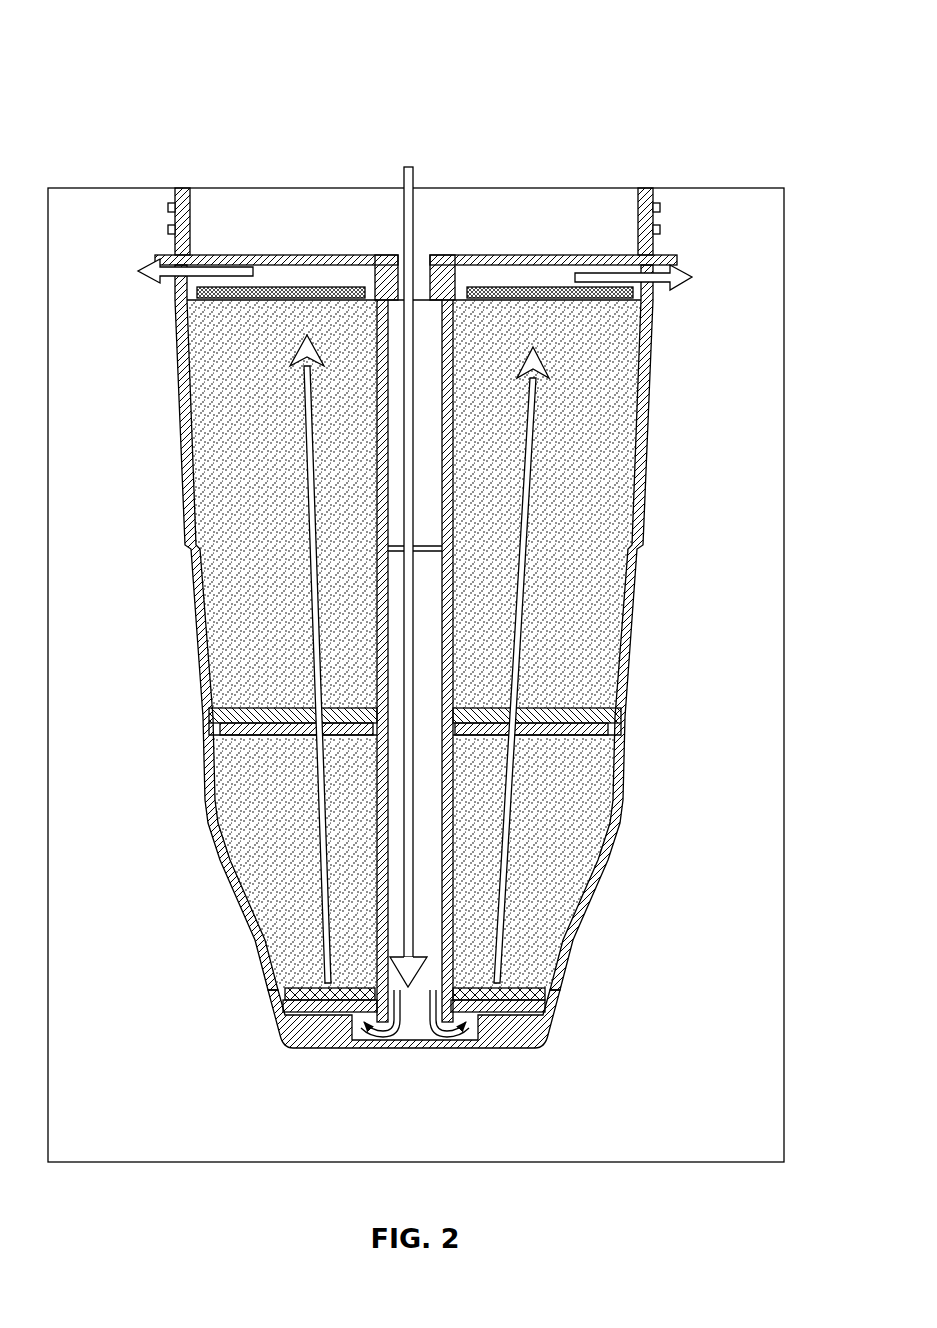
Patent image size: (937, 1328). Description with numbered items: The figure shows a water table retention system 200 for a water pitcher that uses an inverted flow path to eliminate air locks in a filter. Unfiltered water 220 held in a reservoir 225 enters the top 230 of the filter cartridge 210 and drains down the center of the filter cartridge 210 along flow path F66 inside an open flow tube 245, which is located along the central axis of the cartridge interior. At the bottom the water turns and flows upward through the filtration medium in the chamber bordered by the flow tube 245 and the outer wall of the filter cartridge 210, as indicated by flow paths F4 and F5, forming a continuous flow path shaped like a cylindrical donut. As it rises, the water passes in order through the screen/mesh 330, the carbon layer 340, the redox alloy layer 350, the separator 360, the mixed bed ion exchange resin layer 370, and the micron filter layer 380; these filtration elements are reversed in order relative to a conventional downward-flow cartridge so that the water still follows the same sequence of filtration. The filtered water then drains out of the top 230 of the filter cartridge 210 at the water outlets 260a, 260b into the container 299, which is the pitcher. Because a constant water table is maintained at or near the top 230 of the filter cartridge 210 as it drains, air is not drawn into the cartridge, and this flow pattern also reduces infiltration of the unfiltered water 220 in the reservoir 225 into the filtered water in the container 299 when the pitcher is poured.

The water table retention system 200 is at (110, 46).
The filter cartridge 210 is at (642, 628).
The water 220 is at (471, 205).
The reservoir 225 is at (650, 196).
The top of the filter cartridge 230 is at (265, 280).
The open flow tube 245 is at (398, 880).
The water outlet 260a is at (661, 293).
The water outlet 260b is at (165, 290).
The container 299 is at (784, 1093).
The screen/mesh 330 is at (553, 994).
The carbon layer 340 is at (564, 918).
The redox alloy layer 350 is at (606, 746).
The separator 360 is at (621, 715).
The mixed bed ion exchange resin layer 370 is at (614, 467).
The micron filter layer 380 is at (600, 300).
The flow path F4 is at (508, 820).
The flow path F5 is at (314, 822).
The flow path F66 is at (400, 923).